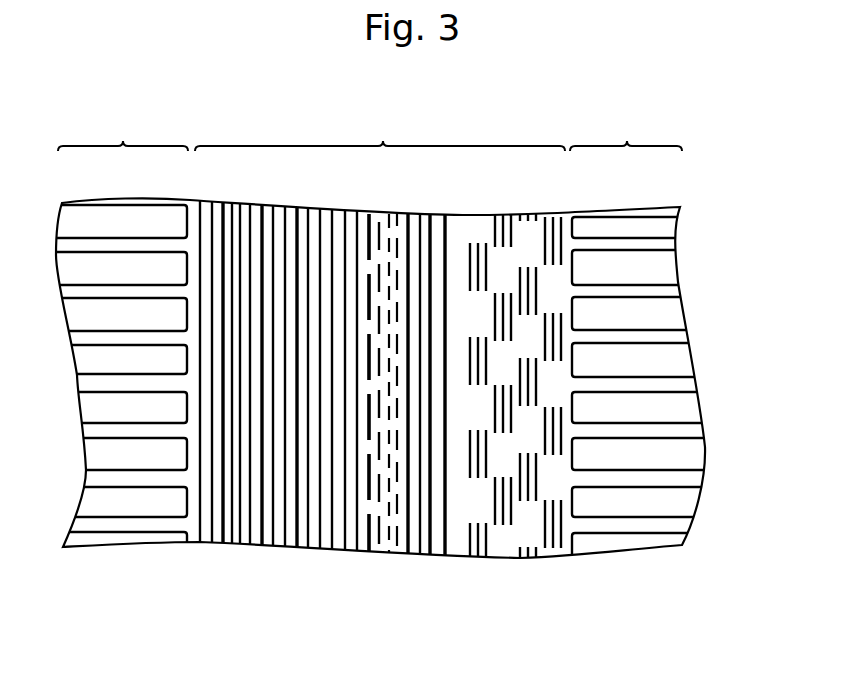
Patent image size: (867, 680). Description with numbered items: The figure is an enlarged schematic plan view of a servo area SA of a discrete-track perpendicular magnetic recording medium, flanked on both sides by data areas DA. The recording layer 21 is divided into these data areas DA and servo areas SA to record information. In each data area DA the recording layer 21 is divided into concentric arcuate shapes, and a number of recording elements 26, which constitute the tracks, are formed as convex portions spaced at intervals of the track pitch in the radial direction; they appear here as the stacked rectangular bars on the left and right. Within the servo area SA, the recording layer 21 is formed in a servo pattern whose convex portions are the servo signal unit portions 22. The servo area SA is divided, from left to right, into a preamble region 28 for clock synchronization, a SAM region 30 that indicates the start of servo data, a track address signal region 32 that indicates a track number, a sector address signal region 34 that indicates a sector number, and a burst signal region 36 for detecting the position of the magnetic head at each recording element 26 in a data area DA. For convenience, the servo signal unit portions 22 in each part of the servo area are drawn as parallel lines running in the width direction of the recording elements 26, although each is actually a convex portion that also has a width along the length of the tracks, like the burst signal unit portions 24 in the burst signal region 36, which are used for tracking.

The recording layer 21 is at (691, 240).
The servo signal unit portions 22 is at (310, 556).
The burst signal unit portions 24 is at (493, 556).
The recording elements 26 is at (683, 361).
The preamble region 28 is at (242, 187).
The SAM region 30 is at (288, 187).
The track address signal region 32 is at (293, 187).
The sector address signal region 34 is at (447, 187).
The burst signal region 36 is at (562, 187).